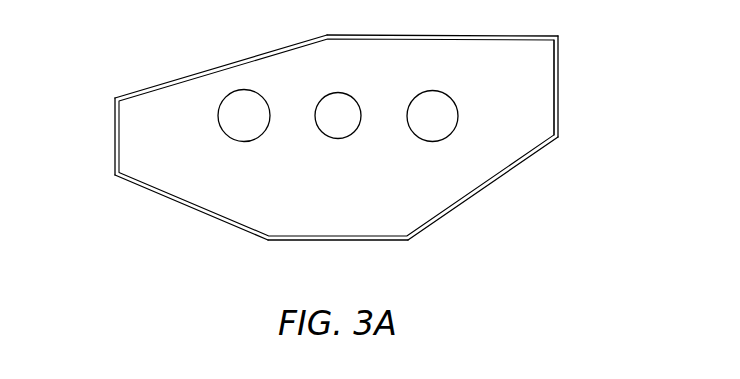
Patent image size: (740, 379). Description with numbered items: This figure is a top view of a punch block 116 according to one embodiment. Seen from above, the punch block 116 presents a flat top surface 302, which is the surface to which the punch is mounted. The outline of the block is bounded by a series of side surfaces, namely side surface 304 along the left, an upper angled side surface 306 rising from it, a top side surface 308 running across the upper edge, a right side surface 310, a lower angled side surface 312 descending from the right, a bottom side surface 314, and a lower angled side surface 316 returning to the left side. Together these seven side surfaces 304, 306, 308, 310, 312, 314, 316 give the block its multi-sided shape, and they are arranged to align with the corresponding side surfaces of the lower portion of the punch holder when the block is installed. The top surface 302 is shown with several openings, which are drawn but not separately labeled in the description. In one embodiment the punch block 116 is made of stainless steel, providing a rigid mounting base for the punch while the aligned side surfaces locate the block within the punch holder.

The top surface 302 is at (510, 87).
The side surface 304 is at (114, 133).
The side surface 306 is at (228, 63).
The side surface 308 is at (438, 35).
The side surface 310 is at (559, 71).
The punch block 116 is at (559, 103).
The side surface 312 is at (485, 188).
The side surface 314 is at (340, 242).
The side surface 316 is at (195, 211).